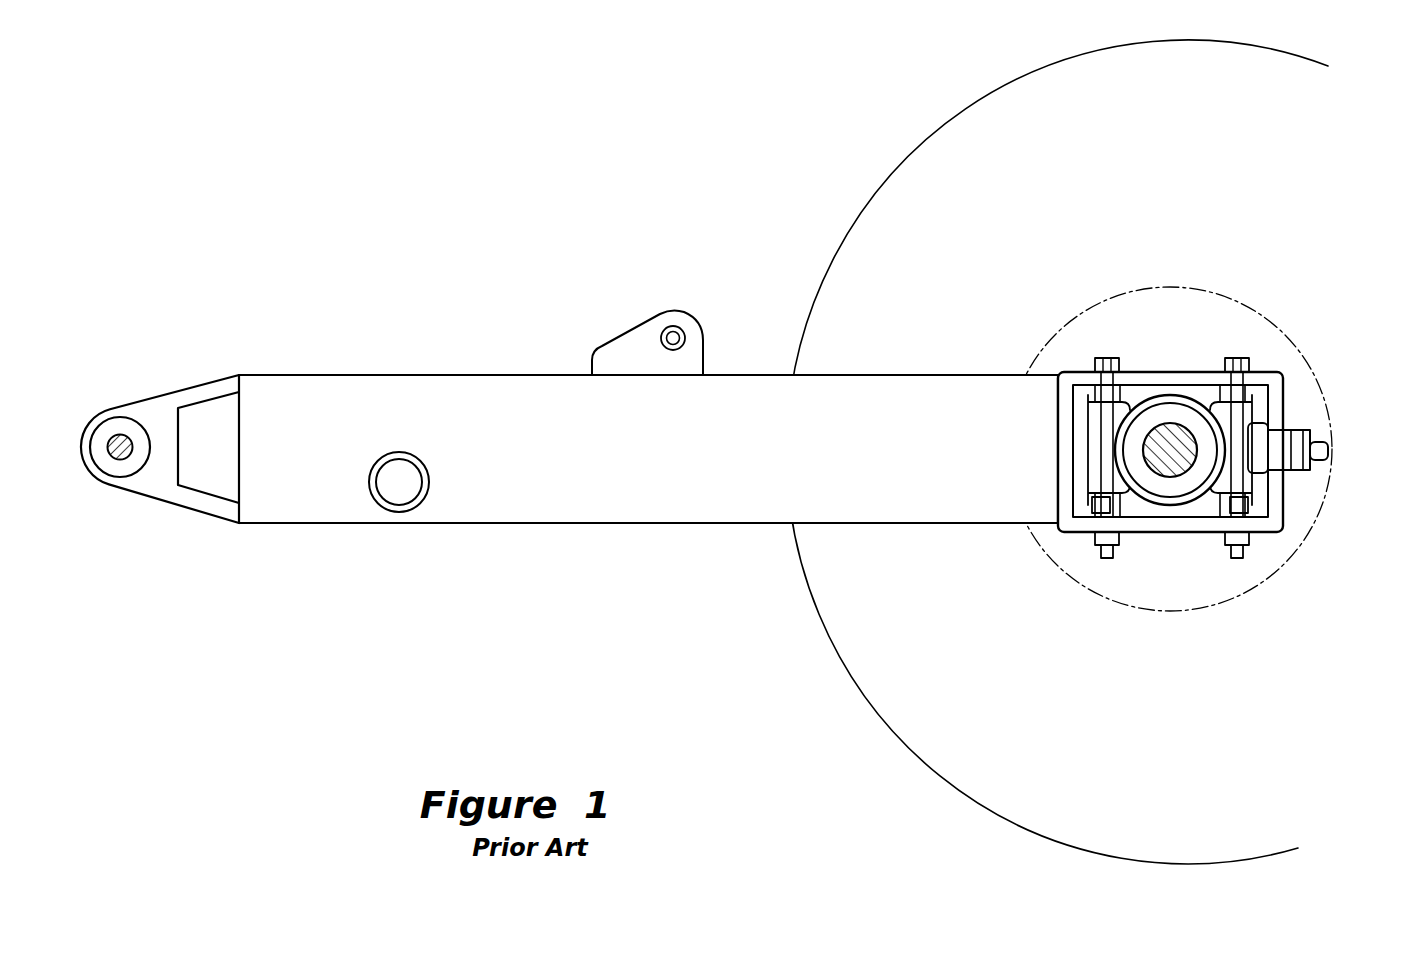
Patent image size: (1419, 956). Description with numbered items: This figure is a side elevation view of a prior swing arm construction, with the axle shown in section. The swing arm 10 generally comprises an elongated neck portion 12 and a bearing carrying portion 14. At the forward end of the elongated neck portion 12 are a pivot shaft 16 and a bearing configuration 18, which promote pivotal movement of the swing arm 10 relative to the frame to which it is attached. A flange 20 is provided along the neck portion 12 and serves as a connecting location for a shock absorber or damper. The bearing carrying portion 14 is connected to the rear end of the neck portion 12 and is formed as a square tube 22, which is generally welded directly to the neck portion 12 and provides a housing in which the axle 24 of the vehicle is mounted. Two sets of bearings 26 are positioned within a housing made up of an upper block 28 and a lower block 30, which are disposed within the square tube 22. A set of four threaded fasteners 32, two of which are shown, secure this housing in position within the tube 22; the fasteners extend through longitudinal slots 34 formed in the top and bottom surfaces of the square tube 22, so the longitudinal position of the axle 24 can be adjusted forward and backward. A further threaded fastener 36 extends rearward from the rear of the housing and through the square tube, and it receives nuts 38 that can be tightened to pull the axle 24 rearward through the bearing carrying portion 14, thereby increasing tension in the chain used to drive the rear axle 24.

The swing arm 10 is at (462, 372).
The elongated neck portion 12 is at (566, 437).
The bearing carrying portion 14 is at (1211, 323).
The pivot shaft 16 is at (128, 457).
The bearing configuration 18 is at (107, 462).
The flange 20 is at (683, 308).
The square tube 22 is at (1178, 384).
The axle 24 is at (1165, 467).
The bearings 26 is at (1175, 492).
The upper block 28 is at (1137, 387).
The lower block 30 is at (1130, 500).
The threaded fasteners 32 is at (1108, 362).
The longitudinal slots 34 is at (1088, 367).
The further threaded fastener 36 is at (1258, 452).
The nuts 38 is at (1328, 341).